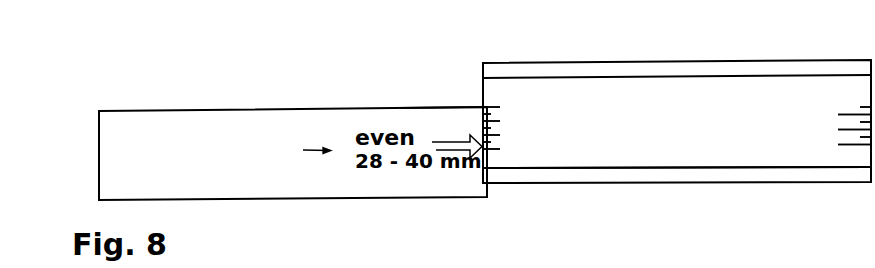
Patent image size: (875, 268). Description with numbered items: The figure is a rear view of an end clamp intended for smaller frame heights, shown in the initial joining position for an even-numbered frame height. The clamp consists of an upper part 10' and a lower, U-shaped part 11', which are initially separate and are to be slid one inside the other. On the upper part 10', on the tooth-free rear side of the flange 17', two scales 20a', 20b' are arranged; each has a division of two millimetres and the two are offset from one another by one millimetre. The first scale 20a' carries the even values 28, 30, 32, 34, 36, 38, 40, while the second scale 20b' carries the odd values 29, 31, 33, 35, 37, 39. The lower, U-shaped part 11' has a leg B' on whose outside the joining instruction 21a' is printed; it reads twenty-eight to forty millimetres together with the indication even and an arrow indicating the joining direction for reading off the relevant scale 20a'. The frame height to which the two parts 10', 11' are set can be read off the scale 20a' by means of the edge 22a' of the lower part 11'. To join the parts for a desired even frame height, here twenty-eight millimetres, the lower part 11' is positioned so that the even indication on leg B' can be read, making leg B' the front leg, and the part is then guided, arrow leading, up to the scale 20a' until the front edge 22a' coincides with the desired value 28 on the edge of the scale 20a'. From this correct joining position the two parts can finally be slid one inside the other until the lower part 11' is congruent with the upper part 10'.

The upper part 10' is at (677, 91).
The lower, U-shaped part 11' is at (293, 182).
The flange 17' is at (677, 194).
The scale 20a' is at (560, 128).
The scale 20b' is at (800, 125).
The joining instruction 21a' is at (291, 150).
The edge 22a' is at (443, 73).
The leg B' is at (196, 88).
The scale mark 28 mm 28 is at (497, 107).
The scale mark 30 mm 30 is at (506, 114).
The scale mark 32 mm 32 is at (497, 121).
The scale mark 34 mm 34 is at (506, 128).
The scale mark 36 mm 36 is at (497, 135).
The scale mark 38 mm 38 is at (506, 142).
The scale mark 40 mm 40 is at (497, 149).
The scale mark 29 mm 29 is at (858, 104).
The scale mark 31 mm 31 is at (848, 112).
The scale mark 33 mm 33 is at (858, 119).
The scale mark 35 mm 35 is at (848, 127).
The scale mark 37 mm 37 is at (858, 134).
The scale mark 39 mm 39 is at (848, 144).